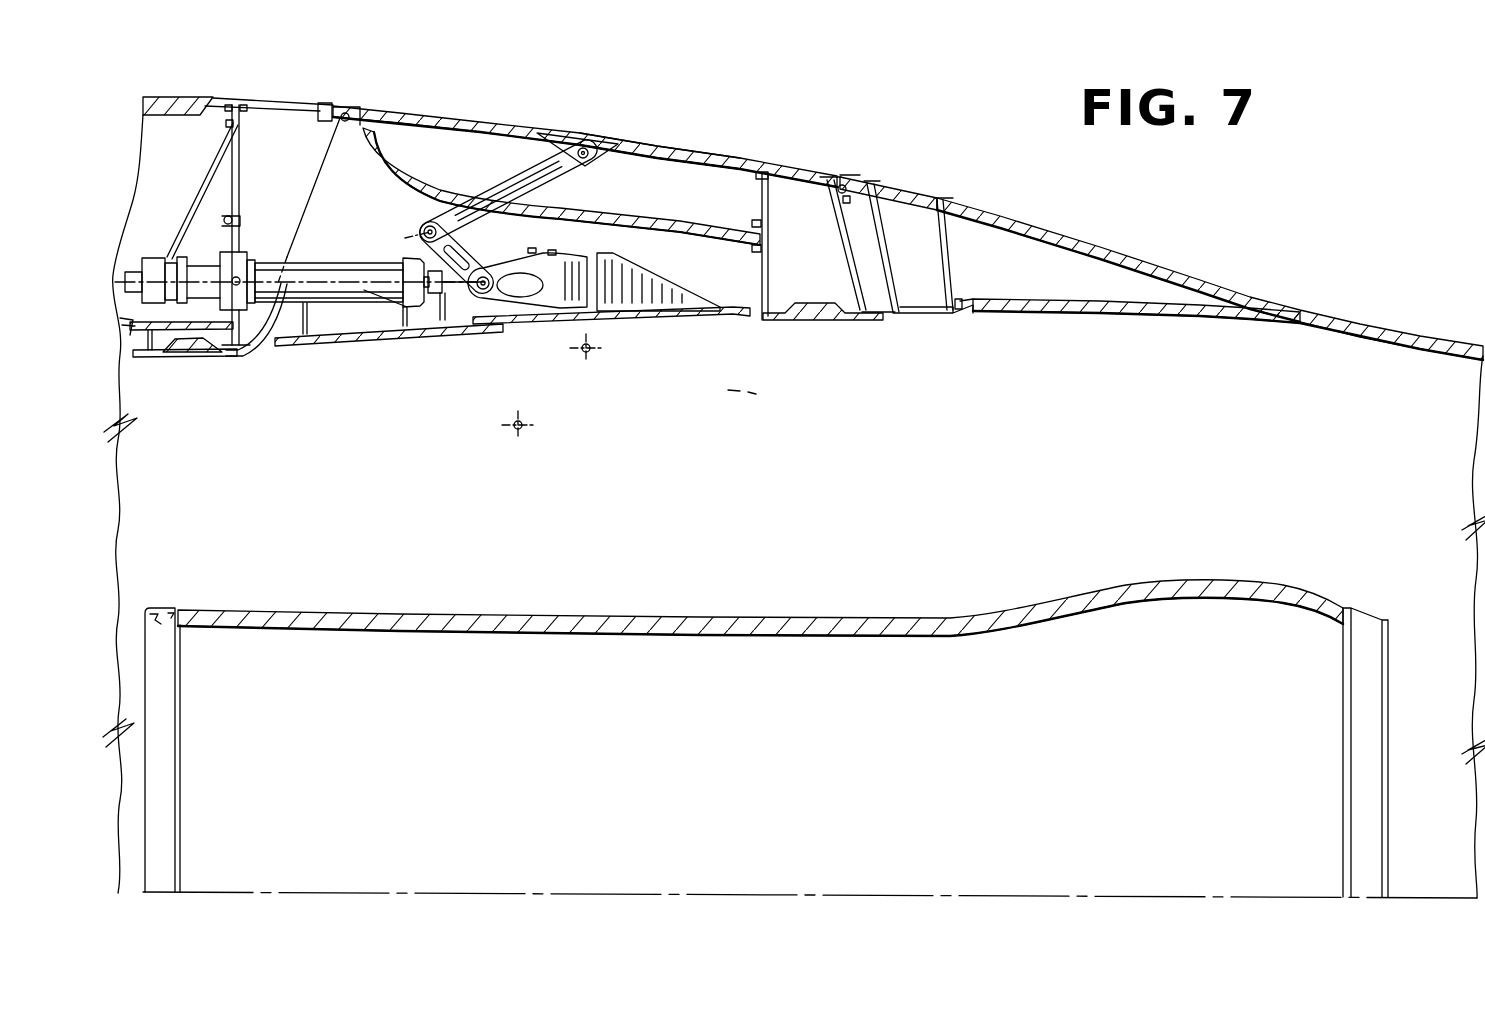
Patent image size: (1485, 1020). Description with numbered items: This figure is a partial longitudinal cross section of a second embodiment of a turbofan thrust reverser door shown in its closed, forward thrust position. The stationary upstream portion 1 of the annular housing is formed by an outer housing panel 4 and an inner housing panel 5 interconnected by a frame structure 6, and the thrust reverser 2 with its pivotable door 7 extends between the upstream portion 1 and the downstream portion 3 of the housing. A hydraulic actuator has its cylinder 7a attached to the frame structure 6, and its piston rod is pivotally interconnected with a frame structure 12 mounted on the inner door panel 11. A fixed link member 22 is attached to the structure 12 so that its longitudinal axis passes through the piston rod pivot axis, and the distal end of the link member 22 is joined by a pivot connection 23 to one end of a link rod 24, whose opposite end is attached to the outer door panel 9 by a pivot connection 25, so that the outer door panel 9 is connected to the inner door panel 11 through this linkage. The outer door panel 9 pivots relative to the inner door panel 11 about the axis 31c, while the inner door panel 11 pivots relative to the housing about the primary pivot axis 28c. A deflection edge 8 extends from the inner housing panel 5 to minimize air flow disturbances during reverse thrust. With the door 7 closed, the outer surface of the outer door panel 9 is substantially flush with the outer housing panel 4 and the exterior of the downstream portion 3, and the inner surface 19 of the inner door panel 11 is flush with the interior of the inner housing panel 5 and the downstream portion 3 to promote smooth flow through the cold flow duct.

The upstream portion 1 is at (139, 96).
The thrust reverser 2 is at (657, 132).
The downstream portion 3 is at (1040, 265).
The outer housing panel 4 is at (181, 97).
The inner housing panel 5 is at (195, 352).
The frame structure 6 is at (226, 216).
The pivotable door 7 is at (716, 92).
The cylinder 7a is at (364, 290).
The deflection edge 8 is at (264, 352).
The outer door panel 9 is at (681, 148).
The inner door panel 11 is at (720, 310).
The frame structure 12 is at (540, 300).
The inner surface 19 is at (478, 335).
The link member 22 is at (478, 262).
The pivot connection 23 is at (425, 228).
The link rod 24 is at (500, 178).
The pivot connection 25 is at (589, 158).
The primary pivot axis 28c is at (592, 356).
The pivot axis 31c is at (523, 432).